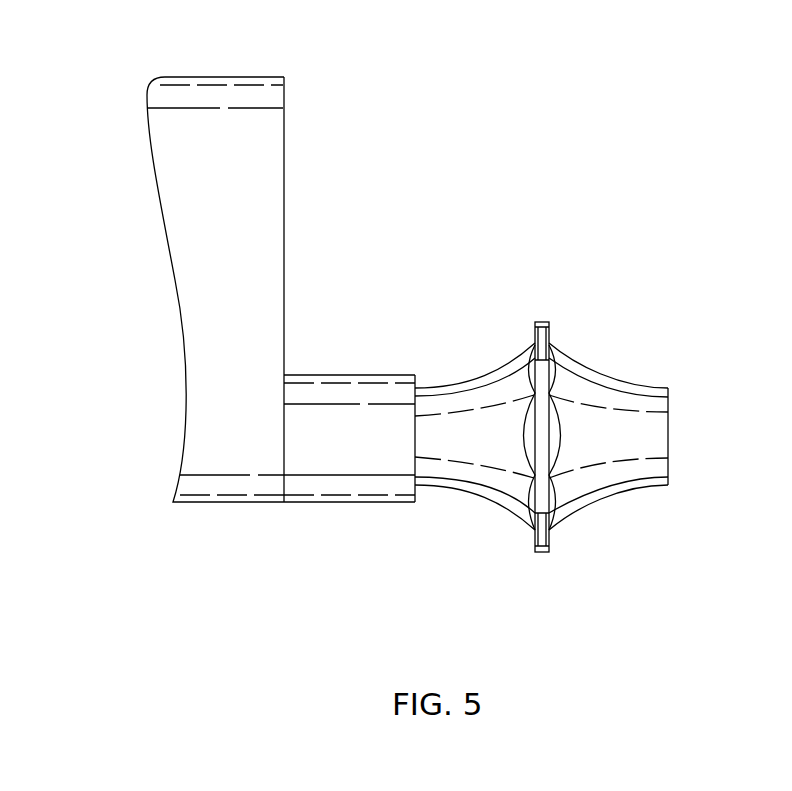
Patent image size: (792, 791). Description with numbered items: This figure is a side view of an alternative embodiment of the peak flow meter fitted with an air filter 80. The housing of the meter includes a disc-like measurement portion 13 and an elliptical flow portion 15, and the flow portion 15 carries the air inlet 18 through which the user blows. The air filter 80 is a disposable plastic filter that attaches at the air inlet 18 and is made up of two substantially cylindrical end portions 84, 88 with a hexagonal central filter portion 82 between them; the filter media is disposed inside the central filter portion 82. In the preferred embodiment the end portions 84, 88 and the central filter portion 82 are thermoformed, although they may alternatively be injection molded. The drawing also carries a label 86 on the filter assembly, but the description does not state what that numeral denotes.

The measurement portion 13 is at (258, 211).
The flow portion 15 is at (362, 456).
The air inlet 18 is at (418, 468).
The air filter 80 is at (603, 454).
The central filter portion 82 is at (546, 323).
The end portion 84 is at (503, 482).
The right portion 86 is at (600, 447).
The end portion 88 is at (673, 393).